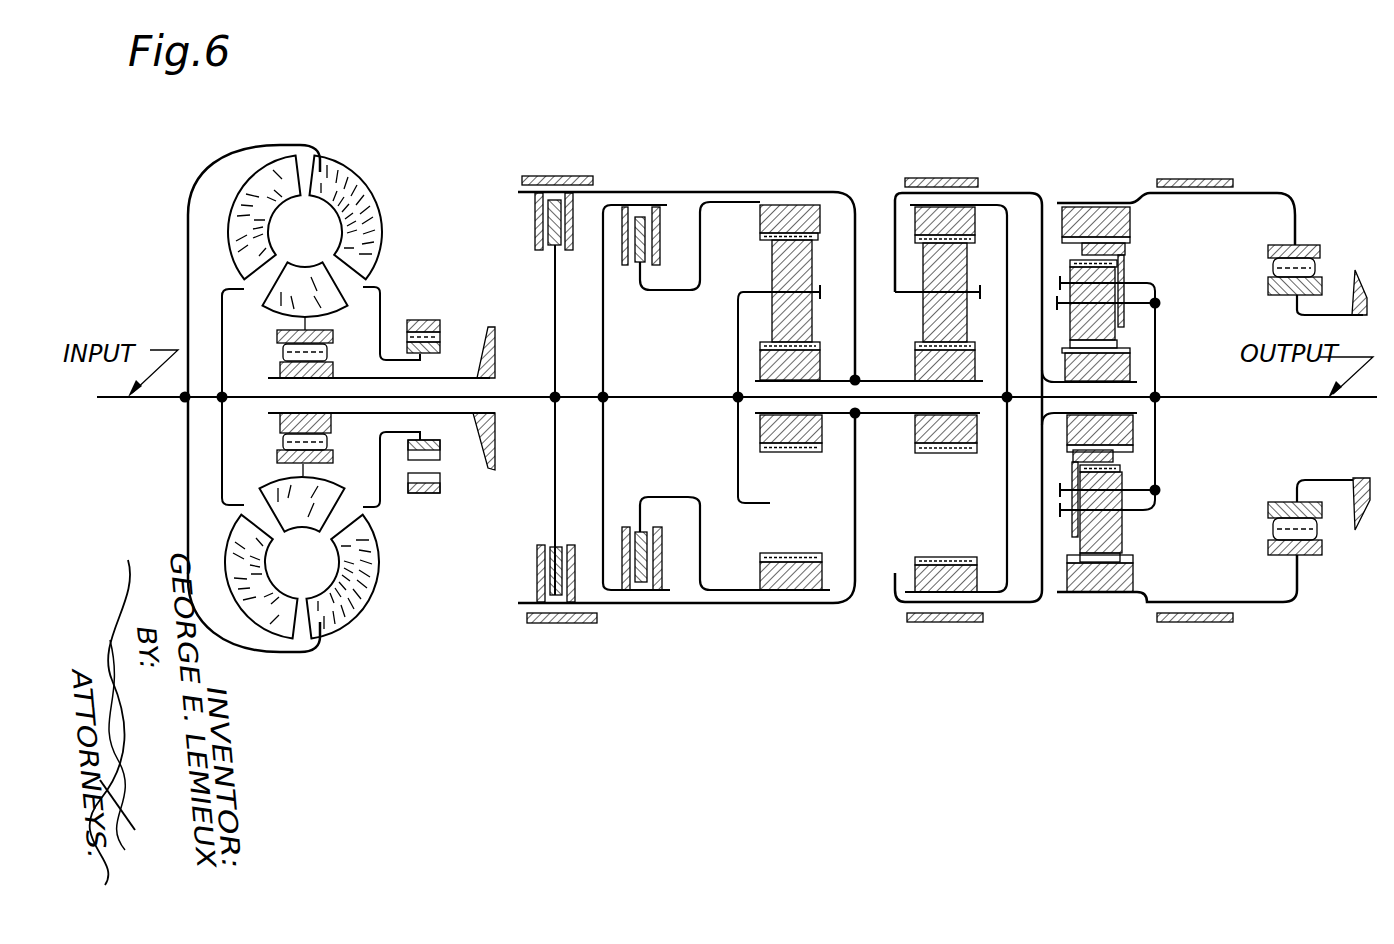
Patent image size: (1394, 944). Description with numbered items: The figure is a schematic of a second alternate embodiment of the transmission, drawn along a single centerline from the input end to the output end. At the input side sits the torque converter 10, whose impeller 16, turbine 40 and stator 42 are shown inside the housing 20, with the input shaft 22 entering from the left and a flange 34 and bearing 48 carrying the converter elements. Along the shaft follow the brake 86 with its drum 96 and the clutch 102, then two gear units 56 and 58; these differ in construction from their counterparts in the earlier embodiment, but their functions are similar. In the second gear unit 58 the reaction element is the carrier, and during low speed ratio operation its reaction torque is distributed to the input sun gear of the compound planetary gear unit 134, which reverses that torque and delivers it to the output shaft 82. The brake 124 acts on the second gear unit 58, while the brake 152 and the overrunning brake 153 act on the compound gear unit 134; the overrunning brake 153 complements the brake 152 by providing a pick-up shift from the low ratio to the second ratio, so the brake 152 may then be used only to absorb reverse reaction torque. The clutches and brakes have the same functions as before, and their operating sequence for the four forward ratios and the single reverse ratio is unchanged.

The torque converter 10 is at (282, 378).
The impeller 16 is at (368, 220).
The housing 20 is at (187, 262).
The input shaft 22 is at (142, 399).
The flange 34 is at (498, 385).
The turbine 40 is at (235, 207).
The stator 42 is at (300, 267).
The bearing 48 is at (440, 323).
The gear unit 56 is at (850, 172).
The second gear unit 58 is at (980, 216).
The output shaft 82 is at (1300, 400).
The brake 86 is at (535, 226).
The brake 96 is at (592, 158).
The clutch 102 is at (718, 180).
The brake 124 is at (997, 163).
The compound planetary gear unit 134 is at (1210, 243).
The brake 152 is at (1248, 155).
The overrunning brake 153 is at (1360, 240).